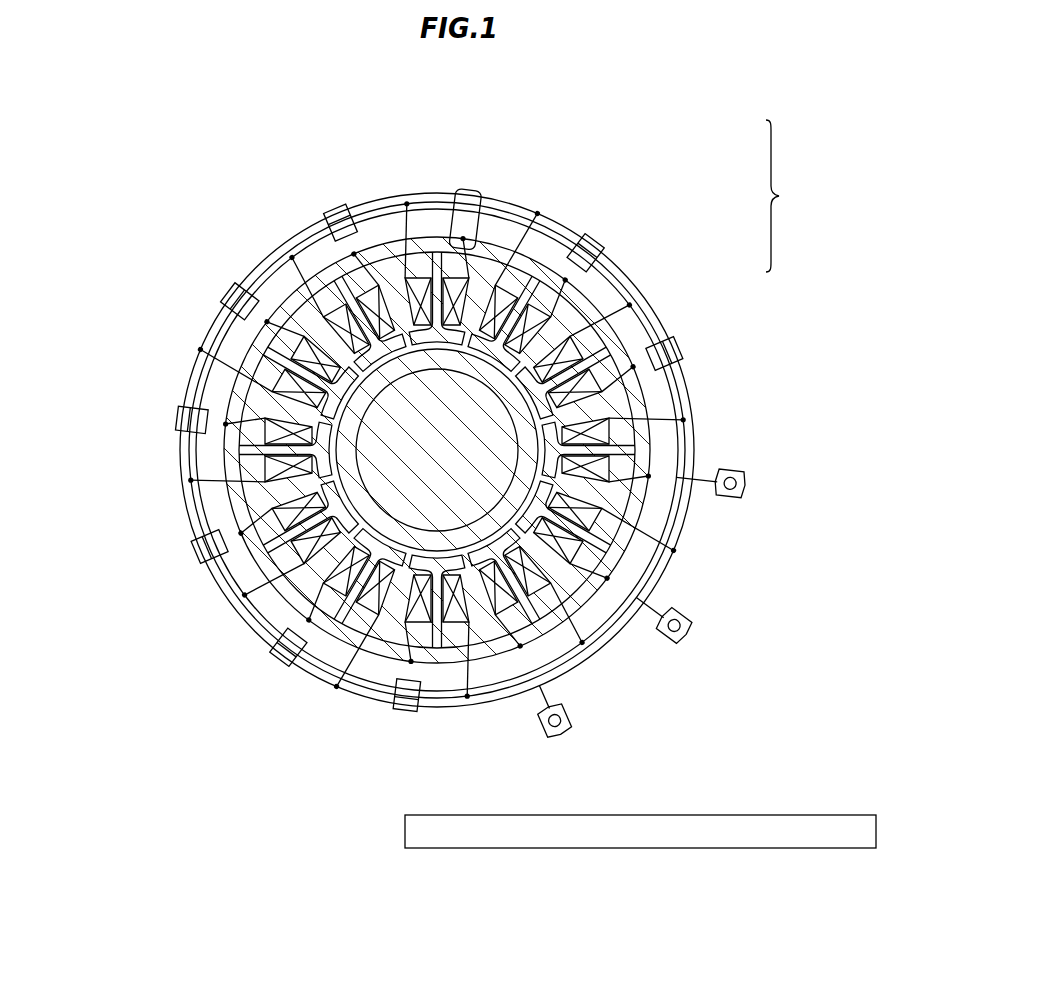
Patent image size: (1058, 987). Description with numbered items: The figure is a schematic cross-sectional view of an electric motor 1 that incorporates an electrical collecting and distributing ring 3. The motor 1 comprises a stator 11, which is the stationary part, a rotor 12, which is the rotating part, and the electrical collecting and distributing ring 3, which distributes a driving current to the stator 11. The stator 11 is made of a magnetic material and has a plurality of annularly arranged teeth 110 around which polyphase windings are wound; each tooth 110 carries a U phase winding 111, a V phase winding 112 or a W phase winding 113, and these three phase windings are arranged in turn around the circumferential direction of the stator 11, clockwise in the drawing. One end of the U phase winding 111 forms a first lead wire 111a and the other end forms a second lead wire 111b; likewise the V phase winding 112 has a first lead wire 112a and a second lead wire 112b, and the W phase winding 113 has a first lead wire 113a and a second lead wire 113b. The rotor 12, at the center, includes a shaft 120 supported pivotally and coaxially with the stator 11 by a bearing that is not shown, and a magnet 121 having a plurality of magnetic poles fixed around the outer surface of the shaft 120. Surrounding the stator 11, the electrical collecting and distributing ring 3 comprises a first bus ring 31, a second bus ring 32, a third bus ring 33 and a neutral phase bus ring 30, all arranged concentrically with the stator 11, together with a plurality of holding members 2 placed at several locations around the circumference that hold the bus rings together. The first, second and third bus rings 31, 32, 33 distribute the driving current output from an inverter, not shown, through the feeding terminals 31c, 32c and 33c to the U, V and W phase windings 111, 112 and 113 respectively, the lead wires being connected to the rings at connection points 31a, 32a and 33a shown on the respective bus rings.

The electric motor 1 is at (814, 196).
The holding member 2 is at (462, 190).
The electrical collecting and distributing ring 3 is at (627, 192).
The stator 11 is at (603, 312).
The rotor 12 is at (612, 322).
The neutral phase bus ring 30 is at (292, 289).
The first bus ring 31 is at (276, 271).
The second bus ring 32 is at (294, 246).
The third bus ring 33 is at (316, 223).
The connection point of first bus ring 31a is at (630, 306).
The connection point of second bus ring 32a is at (684, 420).
The connection point of third bus ring 33a is at (537, 213).
The feeding terminal 31c is at (746, 483).
The feeding terminal 32c is at (690, 618).
The feeding terminal 33c is at (571, 713).
The tooth 110 is at (549, 405).
The U phase winding 111 is at (595, 348).
The first lead wire 111a is at (605, 322).
The second lead wire 111b is at (592, 300).
The V phase winding 112 is at (603, 434).
The first lead wire 112a is at (645, 419).
The second lead wire 112b is at (634, 367).
The W phase winding 113 is at (603, 520).
The first lead wire 113a is at (507, 283).
The second lead wire 113b is at (480, 195).
The shaft 120 is at (402, 460).
The magnet 121 is at (373, 529).